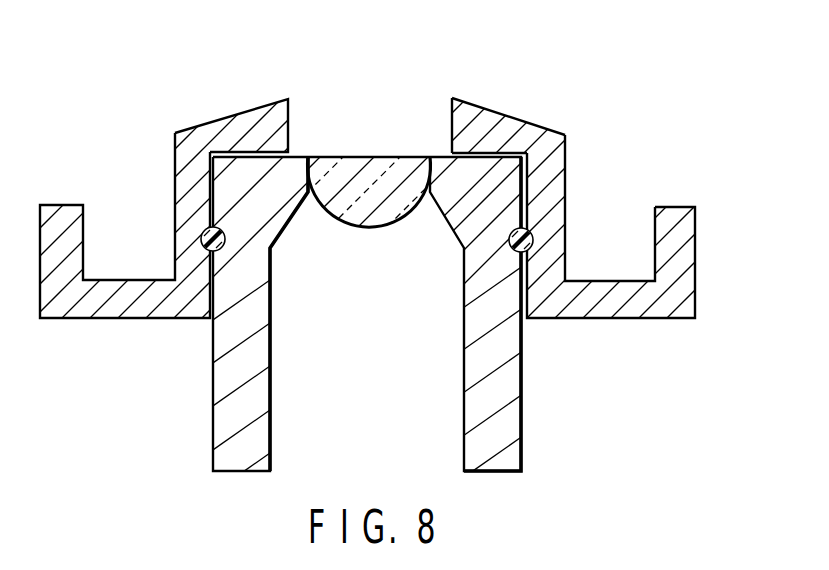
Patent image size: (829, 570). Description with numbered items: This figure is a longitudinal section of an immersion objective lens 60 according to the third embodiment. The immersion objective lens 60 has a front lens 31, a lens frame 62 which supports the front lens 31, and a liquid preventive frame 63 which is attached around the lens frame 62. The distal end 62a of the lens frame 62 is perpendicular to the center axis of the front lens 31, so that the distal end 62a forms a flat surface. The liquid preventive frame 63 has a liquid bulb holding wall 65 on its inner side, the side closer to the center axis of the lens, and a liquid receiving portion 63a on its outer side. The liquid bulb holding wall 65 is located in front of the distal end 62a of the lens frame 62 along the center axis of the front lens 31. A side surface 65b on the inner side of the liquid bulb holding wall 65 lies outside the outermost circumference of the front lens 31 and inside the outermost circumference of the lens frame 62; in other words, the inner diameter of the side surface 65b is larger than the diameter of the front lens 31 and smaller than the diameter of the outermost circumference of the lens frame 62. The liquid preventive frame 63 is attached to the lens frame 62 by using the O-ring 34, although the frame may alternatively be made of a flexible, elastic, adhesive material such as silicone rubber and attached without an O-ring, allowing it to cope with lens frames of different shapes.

The immersion objective lens 60 is at (364, 80).
The front lens 31 is at (367, 157).
The O-ring 34 is at (512, 242).
The lens frame 62 is at (521, 428).
The distal end 62a is at (257, 153).
The liquid preventive frame 63 is at (697, 262).
The liquid receiving portion 63a is at (598, 227).
The liquid bulb holding wall 65 is at (497, 113).
The side surface 65b is at (450, 112).